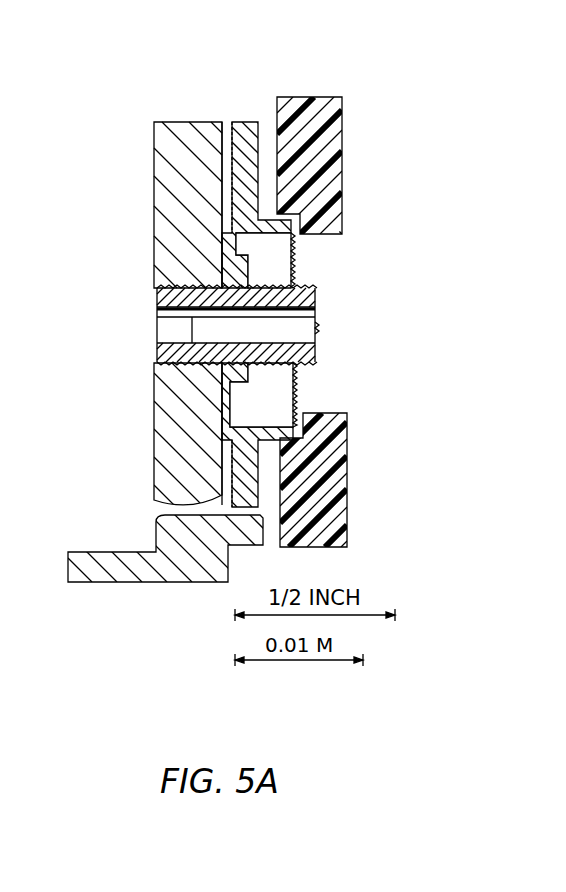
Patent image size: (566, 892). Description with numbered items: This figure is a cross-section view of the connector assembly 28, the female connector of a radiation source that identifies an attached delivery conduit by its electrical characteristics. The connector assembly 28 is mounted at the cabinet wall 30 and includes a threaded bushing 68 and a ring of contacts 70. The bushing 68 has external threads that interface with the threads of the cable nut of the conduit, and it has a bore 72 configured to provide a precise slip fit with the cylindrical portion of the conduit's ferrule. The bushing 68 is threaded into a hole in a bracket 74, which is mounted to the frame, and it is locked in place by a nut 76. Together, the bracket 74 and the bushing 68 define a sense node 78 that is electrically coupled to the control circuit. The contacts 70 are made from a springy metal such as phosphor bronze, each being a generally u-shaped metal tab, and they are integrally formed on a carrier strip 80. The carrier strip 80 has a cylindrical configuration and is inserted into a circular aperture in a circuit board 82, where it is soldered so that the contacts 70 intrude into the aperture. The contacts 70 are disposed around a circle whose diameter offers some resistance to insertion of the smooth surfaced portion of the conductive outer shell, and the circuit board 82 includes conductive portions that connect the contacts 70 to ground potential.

The connector assembly 28 is at (400, 60).
The cabinet wall 30 is at (343, 158).
The threaded bushing 68 is at (318, 298).
The contacts 70 is at (292, 256).
The bore 72 is at (305, 327).
The bracket 74 is at (166, 253).
The nut 76 is at (296, 386).
The sense node 78 is at (158, 453).
The carrier strip 80 is at (222, 256).
The circuit board 82 is at (238, 122).